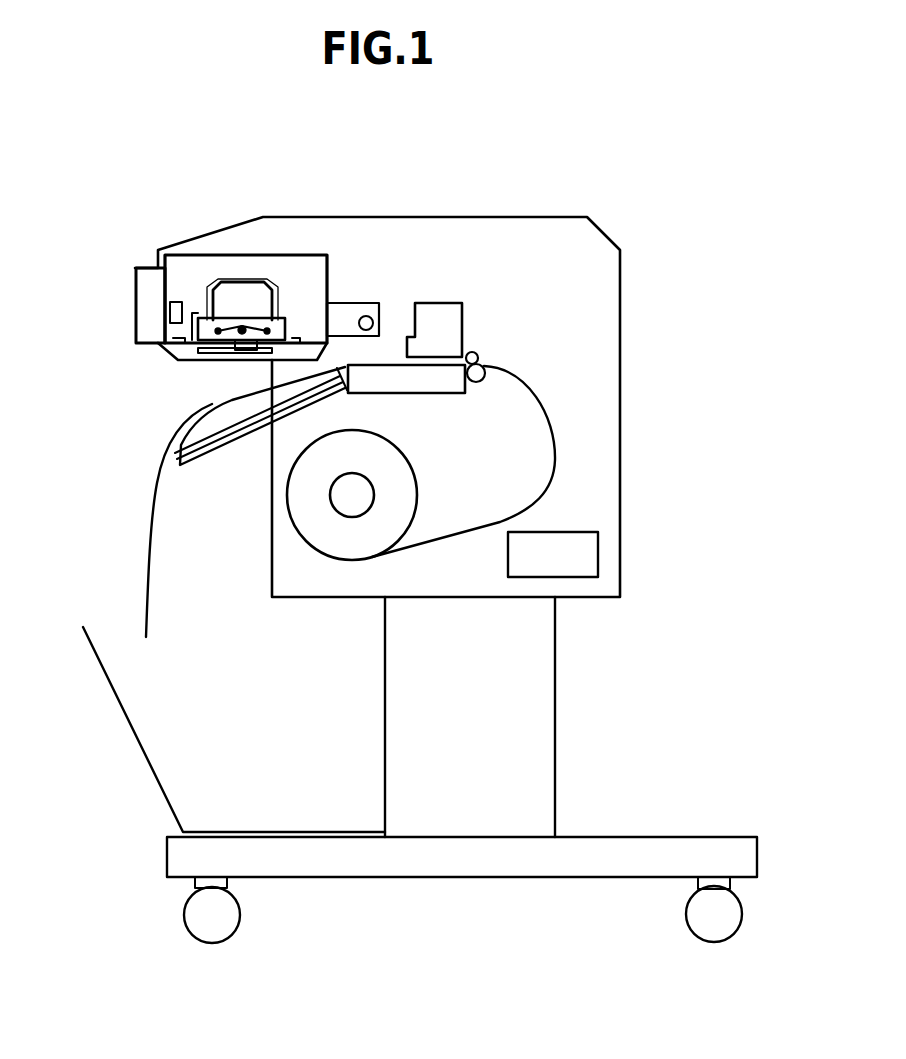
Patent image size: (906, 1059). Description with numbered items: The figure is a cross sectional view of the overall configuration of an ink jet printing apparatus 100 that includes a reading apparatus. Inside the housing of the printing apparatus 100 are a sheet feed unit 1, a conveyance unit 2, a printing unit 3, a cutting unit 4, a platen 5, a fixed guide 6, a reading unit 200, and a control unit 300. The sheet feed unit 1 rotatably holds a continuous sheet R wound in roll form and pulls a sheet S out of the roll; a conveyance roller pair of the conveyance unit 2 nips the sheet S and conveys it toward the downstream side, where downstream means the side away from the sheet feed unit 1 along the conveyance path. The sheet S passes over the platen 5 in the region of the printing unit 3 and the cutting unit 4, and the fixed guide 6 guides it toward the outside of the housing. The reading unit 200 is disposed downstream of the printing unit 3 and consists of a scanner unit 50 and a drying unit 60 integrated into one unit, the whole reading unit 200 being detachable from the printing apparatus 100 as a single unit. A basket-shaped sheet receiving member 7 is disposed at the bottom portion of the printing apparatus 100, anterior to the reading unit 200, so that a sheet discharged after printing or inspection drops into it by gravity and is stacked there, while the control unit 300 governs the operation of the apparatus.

The printing apparatus 100 is at (626, 339).
The reading unit 200 is at (133, 236).
The scanner unit 50 is at (242, 246).
The drying unit 60 is at (130, 307).
The cutting unit 4 is at (392, 352).
The printing unit 3 is at (438, 310).
The conveyance unit 2 is at (472, 351).
The platen 5 is at (457, 386).
The continuous sheet R is at (335, 537).
The sheet feed unit 1 is at (343, 497).
The fixed guide 6 is at (236, 435).
The sheet S is at (150, 528).
The control unit 300 is at (589, 554).
The sheet receiving member 7 is at (102, 675).